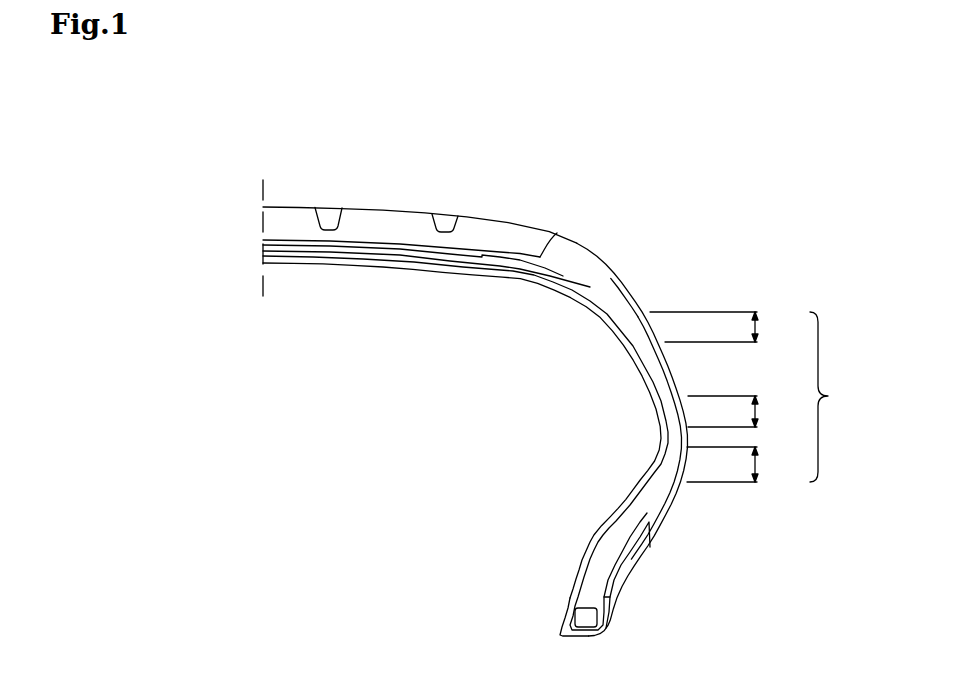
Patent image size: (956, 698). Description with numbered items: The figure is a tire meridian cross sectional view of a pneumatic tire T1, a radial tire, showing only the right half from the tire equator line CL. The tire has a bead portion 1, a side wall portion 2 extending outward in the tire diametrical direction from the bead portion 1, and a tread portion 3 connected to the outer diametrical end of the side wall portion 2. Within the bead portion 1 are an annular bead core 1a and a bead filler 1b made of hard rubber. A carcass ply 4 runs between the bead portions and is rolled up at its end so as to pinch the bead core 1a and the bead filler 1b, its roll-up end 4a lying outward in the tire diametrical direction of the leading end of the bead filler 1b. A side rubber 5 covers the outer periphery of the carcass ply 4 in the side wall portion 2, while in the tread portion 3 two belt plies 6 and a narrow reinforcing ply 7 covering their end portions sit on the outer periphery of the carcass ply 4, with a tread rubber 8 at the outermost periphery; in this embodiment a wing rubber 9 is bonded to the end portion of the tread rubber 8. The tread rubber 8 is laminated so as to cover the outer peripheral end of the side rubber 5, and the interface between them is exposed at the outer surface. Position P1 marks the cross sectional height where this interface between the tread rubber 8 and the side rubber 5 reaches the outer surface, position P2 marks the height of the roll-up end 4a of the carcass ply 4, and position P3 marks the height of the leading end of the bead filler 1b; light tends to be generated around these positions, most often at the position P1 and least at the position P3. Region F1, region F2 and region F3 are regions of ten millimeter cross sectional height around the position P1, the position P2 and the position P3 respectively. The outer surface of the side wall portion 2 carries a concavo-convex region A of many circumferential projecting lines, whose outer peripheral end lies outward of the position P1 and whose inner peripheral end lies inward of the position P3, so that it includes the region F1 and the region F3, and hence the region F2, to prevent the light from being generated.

The bead portion 1 is at (641, 610).
The bead core 1a is at (583, 617).
The bead filler 1b is at (610, 558).
The side wall portion 2 is at (697, 502).
The tread portion 3 is at (400, 208).
The carcass ply 4 is at (643, 352).
The roll-up end 4a is at (667, 410).
The side rubber 5 is at (681, 375).
The belt plies 6 is at (380, 245).
The narrow reinforcing ply 7 is at (562, 233).
The tread rubber 8 is at (482, 217).
The wing rubber 9 is at (627, 288).
The pneumatic tire T1 is at (358, 480).
The tire equator line CL is at (260, 223).
The concavo-convex region A is at (832, 397).
The position P1 is at (659, 326).
The position P2 is at (692, 412).
The position P3 is at (692, 463).
The region F1 is at (771, 327).
The region F2 is at (771, 412).
The region F3 is at (771, 464).